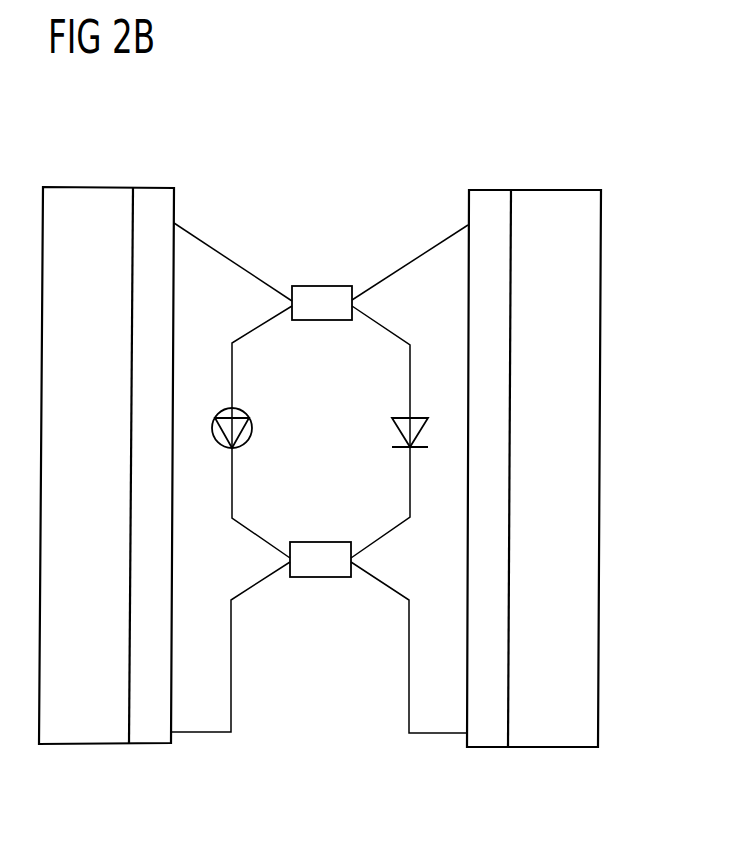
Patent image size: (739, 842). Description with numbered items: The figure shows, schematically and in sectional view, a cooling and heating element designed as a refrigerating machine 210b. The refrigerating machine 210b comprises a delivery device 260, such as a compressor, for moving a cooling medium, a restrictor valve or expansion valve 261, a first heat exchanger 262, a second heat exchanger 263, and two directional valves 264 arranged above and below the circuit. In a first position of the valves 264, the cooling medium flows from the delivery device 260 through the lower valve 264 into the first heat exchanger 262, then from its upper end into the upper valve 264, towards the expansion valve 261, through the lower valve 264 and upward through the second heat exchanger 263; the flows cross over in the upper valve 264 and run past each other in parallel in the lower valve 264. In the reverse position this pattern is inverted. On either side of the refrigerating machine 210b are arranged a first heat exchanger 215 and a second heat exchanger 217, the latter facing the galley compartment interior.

The first heat exchanger 215 is at (85, 732).
The second heat exchanger 217 is at (553, 733).
The first heat exchanger 262 is at (157, 198).
The second heat exchanger 263 is at (493, 200).
The valve 264 is at (322, 285).
The delivery device 260 is at (246, 411).
The restrictor valve or expansion valve 261 is at (395, 428).
The refrigerating machine 210b is at (306, 752).